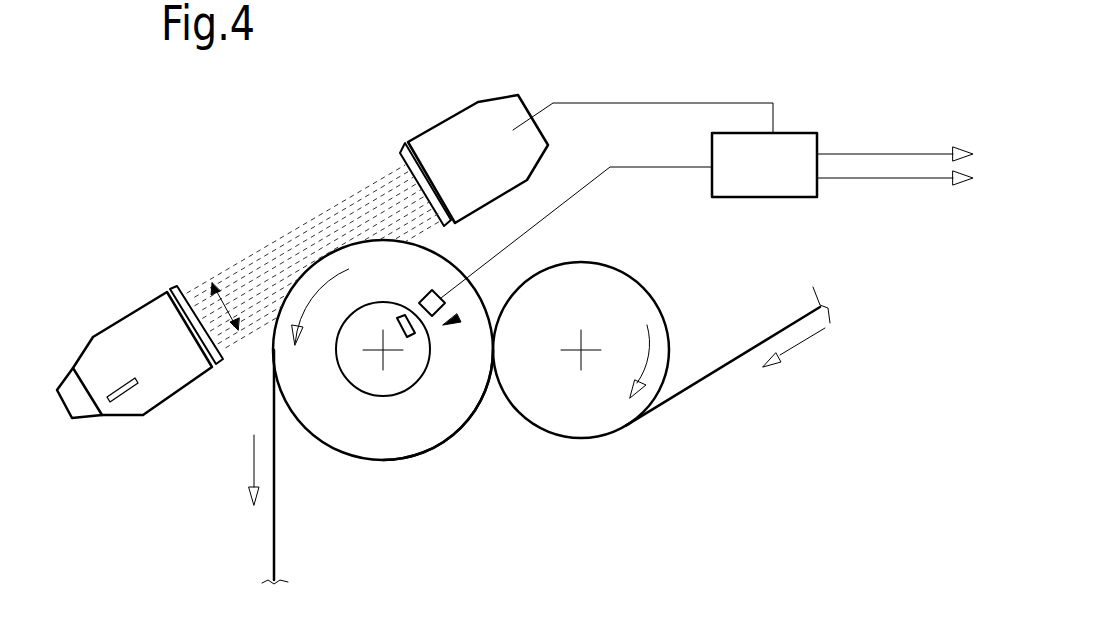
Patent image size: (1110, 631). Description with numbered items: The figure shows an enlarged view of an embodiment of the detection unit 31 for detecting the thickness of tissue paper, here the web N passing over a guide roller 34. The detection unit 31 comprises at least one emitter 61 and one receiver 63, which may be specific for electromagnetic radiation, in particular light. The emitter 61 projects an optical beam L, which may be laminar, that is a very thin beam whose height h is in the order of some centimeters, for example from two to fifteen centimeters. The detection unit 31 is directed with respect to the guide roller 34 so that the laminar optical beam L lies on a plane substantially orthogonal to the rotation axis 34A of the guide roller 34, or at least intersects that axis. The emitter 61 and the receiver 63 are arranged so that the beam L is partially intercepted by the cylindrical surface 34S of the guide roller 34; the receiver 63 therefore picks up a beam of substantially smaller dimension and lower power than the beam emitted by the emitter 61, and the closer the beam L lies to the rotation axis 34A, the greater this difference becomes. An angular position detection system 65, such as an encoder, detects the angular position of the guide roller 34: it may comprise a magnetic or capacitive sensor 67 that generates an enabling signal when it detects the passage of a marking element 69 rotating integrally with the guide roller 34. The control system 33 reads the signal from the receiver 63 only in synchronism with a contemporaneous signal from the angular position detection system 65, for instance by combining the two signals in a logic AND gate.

The detection unit 31 is at (280, 210).
The control system 33 is at (782, 148).
The guide roller 34 is at (377, 438).
The rotation axis 34A is at (388, 340).
The cylindrical surface 34S is at (437, 450).
The emitter 61 is at (137, 325).
The receiver 63 is at (467, 127).
The angular position detection system 65 is at (459, 319).
The magnetic or capacitive sensor 67 is at (423, 292).
The marking element 69 is at (396, 321).
The optical beam L is at (347, 184).
The height h is at (228, 302).
The web N is at (275, 504).